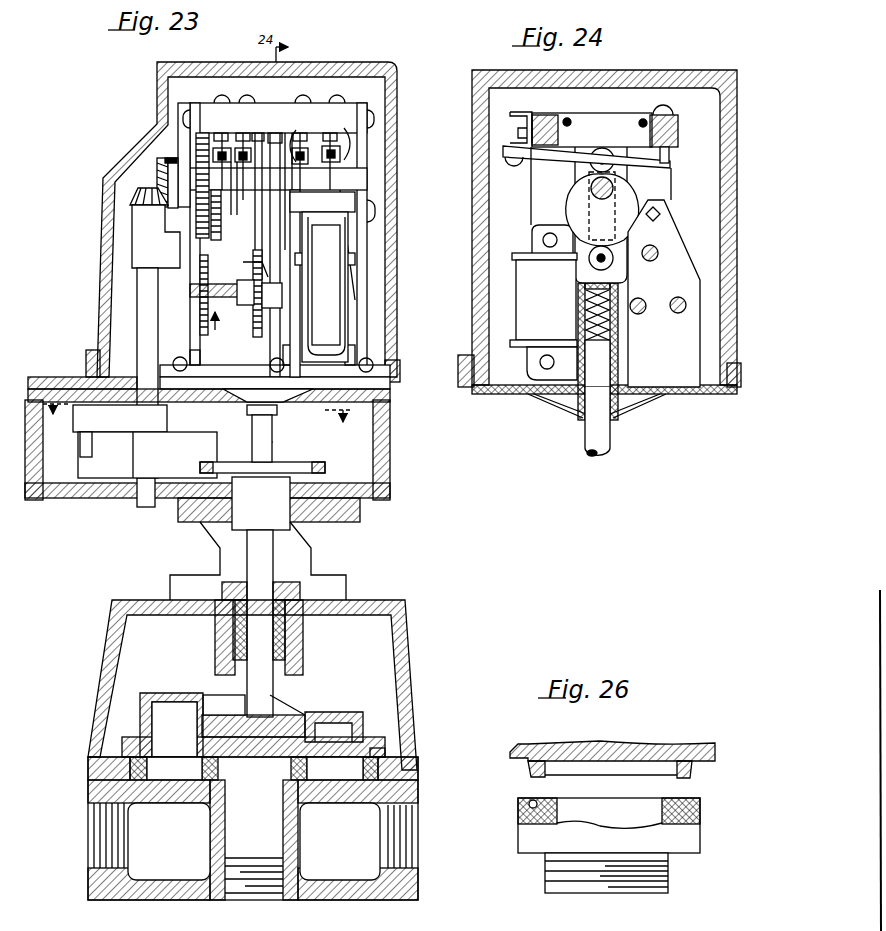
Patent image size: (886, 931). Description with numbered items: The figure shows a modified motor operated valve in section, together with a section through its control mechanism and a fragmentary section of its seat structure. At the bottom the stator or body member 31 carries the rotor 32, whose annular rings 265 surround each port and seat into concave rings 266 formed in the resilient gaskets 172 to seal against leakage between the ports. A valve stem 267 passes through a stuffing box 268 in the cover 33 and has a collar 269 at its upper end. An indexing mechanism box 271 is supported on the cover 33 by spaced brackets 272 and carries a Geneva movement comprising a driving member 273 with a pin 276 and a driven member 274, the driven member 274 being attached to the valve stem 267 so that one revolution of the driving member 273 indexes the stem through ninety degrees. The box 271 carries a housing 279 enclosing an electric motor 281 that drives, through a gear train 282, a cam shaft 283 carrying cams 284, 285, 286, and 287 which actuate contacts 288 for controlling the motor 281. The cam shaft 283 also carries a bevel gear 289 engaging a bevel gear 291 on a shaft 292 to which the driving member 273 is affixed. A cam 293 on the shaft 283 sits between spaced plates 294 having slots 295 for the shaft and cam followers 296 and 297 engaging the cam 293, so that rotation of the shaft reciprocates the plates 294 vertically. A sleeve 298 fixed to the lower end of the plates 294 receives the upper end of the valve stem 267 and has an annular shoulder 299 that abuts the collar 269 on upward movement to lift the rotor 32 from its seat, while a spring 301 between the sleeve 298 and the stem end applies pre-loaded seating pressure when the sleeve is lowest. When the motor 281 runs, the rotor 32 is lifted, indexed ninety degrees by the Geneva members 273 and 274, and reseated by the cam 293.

In FIG. 23, the housing 279 is at (398, 104).
In FIG. 24, the housing 279 is at (738, 337).
In FIG. 23, the cam shaft 283 is at (352, 183).
In FIG. 24, the cam shaft 283 is at (580, 190).
In FIG. 23, the spaced plates 294 is at (268, 140).
In FIG. 24, the spaced plates 294 is at (582, 163).
In FIG. 23, the cam 286 is at (294, 140).
In FIG. 23, the cam 287 is at (342, 160).
In FIG. 23, the cam 284 is at (160, 156).
In FIG. 23, the cam 285 is at (239, 194).
In FIG. 23, the bevel gear 289 is at (207, 150).
In FIG. 23, the bevel gear 291 is at (135, 199).
In FIG. 23, the shaft 292 is at (148, 289).
In FIG. 23, the gear train 282 is at (225, 302).
In FIG. 23, the sleeve 298 is at (259, 305).
In FIG. 24, the sleeve 298 is at (612, 327).
In FIG. 23, the electric motor 281 is at (322, 283).
In FIG. 24, the electric motor 281 is at (520, 306).
In FIG. 23, the indexing mechanism box 271 is at (388, 464).
In FIG. 23, the driving member 273 is at (137, 473).
In FIG. 23, the pin 276 is at (85, 457).
In FIG. 23, the driven member 274 is at (282, 468).
In FIG. 23, the valve stem 267 is at (268, 554).
In FIG. 24, the valve stem 267 is at (588, 438).
In FIG. 23, the spaced brackets 272 is at (180, 582).
In FIG. 23, the stuffing box 268 is at (290, 615).
In FIG. 23, the cover 33 is at (410, 638).
In FIG. 23, the annular rings 265 is at (392, 746).
In FIG. 26, the annular rings 265 is at (693, 773).
In FIG. 23, the rotor 32 is at (372, 740).
In FIG. 26, the rotor 32 is at (683, 742).
In FIG. 23, the concave rings 266 is at (400, 765).
In FIG. 26, the concave rings 266 is at (686, 806).
In FIG. 23, the resilient gaskets 172 is at (412, 778).
In FIG. 26, the resilient gaskets 172 is at (700, 824).
In FIG. 23, the stator or body member 31 is at (419, 805).
In FIG. 24, the annular shoulder 299 is at (582, 415).
In FIG. 24, the collar 269 is at (608, 370).
In FIG. 24, the cam follower 296 is at (603, 150).
In FIG. 24, the cam 293 is at (628, 200).
In FIG. 24, the cam follower 297 is at (610, 262).
In FIG. 24, the contacts 288 is at (668, 162).
In FIG. 24, the slots 295 is at (664, 293).
In FIG. 24, the spring 301 is at (532, 363).